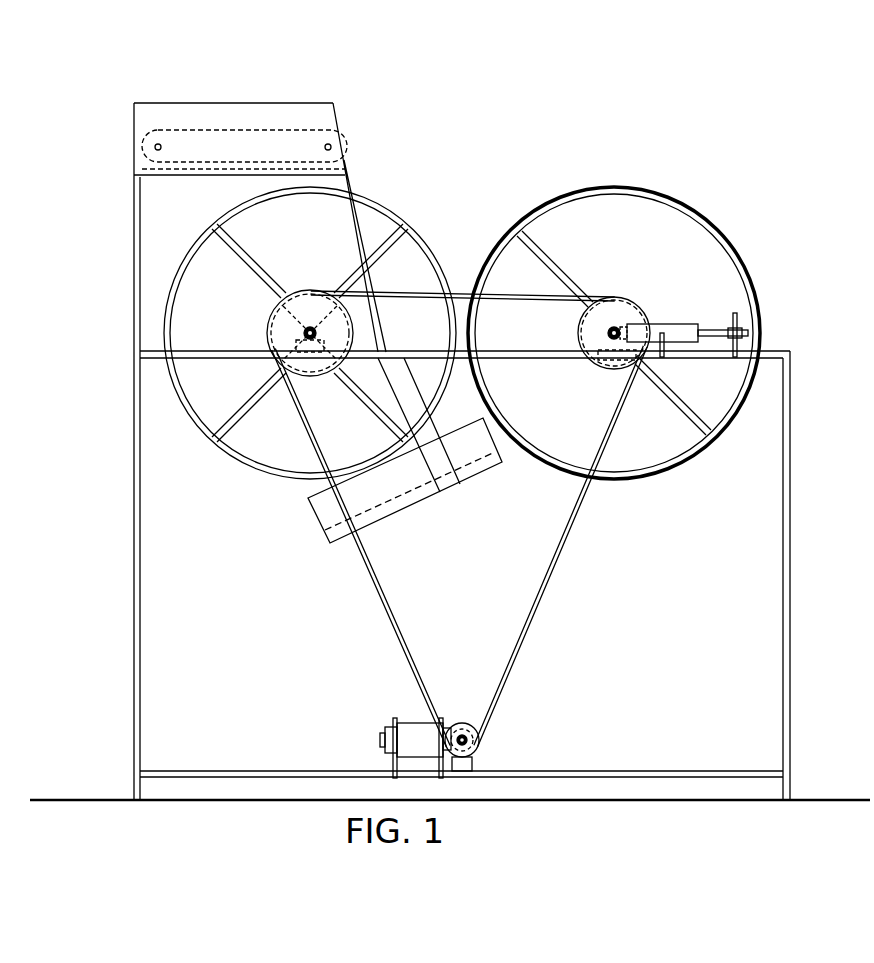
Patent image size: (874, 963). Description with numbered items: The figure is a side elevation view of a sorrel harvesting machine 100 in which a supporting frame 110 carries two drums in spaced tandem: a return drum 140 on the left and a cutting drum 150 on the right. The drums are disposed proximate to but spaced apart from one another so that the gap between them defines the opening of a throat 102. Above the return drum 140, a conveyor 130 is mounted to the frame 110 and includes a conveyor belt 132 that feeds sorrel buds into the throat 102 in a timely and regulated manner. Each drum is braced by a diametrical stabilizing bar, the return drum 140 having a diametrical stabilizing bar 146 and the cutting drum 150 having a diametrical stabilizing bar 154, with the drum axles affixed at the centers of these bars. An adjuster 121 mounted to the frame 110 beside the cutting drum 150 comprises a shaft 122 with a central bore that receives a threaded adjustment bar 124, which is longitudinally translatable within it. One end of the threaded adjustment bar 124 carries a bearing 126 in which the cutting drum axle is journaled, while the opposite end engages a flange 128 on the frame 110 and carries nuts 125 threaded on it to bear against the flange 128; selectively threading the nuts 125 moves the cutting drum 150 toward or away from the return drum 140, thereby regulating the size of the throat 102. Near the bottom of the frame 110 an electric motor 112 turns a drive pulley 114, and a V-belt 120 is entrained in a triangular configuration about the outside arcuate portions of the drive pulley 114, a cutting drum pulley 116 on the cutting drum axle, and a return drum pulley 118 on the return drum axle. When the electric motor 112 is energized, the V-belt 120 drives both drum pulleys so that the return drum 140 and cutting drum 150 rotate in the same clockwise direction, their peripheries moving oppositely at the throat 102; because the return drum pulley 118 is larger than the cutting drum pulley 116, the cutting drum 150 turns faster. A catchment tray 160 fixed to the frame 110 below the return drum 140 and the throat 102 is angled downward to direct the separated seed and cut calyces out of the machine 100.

The sorrel harvesting machine 100 is at (770, 100).
The throat 102 is at (468, 220).
The supporting frame 110 is at (793, 630).
The electric motor 112 is at (410, 722).
The drive pulley 114 is at (465, 722).
The cutting drum pulley 116 is at (583, 365).
The return drum pulley 118 is at (314, 372).
The V-belt 120 is at (553, 606).
The adjuster 121 is at (670, 317).
The shaft 122 is at (690, 323).
The threaded adjustment bar 124 is at (737, 318).
The nuts 125 is at (750, 335).
The bearing 126 is at (613, 325).
The flange 128 is at (740, 347).
The conveyor 130 is at (348, 133).
The conveyor belt 132 is at (266, 128).
The return drum 140 is at (185, 258).
The diametrical stabilizing bar 146 is at (263, 268).
The cutting drum 150 is at (693, 195).
The diametrical stabilizing bar 154 is at (560, 270).
The catchment tray 160 is at (422, 503).